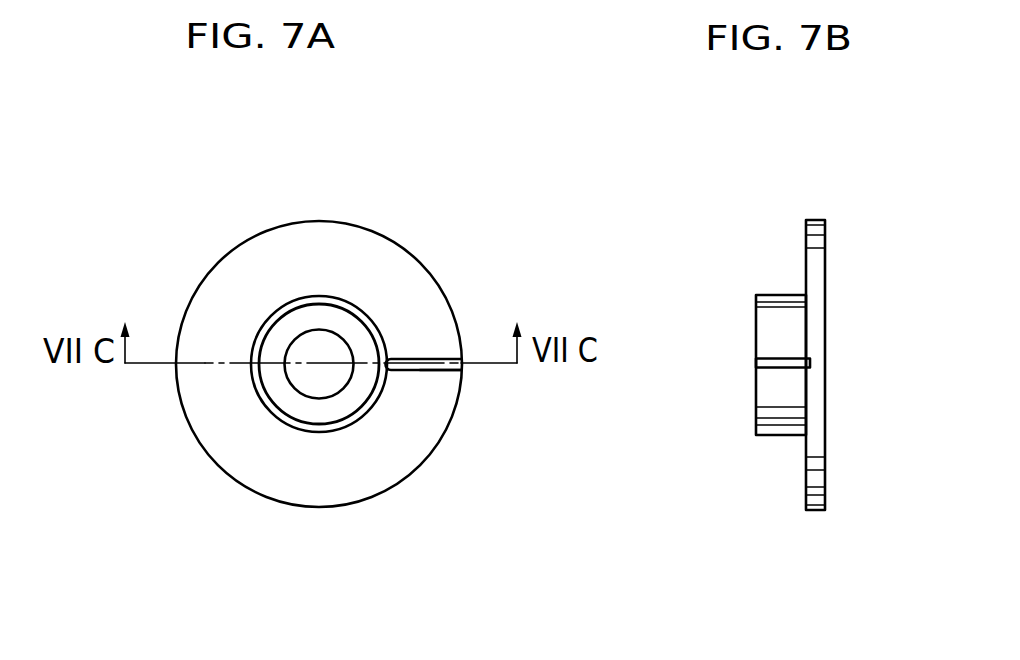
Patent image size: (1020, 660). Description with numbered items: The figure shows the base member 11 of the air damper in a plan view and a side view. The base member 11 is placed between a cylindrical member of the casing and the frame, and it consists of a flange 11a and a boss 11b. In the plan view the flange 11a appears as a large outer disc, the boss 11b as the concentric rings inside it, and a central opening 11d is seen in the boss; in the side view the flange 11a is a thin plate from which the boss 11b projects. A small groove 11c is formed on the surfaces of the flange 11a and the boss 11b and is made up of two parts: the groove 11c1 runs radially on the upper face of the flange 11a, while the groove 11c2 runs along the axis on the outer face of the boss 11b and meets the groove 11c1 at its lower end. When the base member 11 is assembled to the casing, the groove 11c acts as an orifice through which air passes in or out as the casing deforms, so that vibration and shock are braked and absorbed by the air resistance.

In FIG. 7A, the base member 11 is at (439, 255).
In FIG. 7B, the base member 11 is at (791, 255).
In FIG. 7A, the flange 11a is at (393, 473).
In FIG. 7B, the flange 11a is at (813, 460).
In FIG. 7A, the boss 11b is at (325, 430).
In FIG. 7B, the boss 11b is at (770, 407).
In FIG. 7A, the groove 11c is at (407, 351).
In FIG. 7A, the groove 11c1 is at (433, 370).
In FIG. 7B, the groove 11c2 is at (788, 362).
In FIG. 7A, the center hole 11d is at (322, 334).